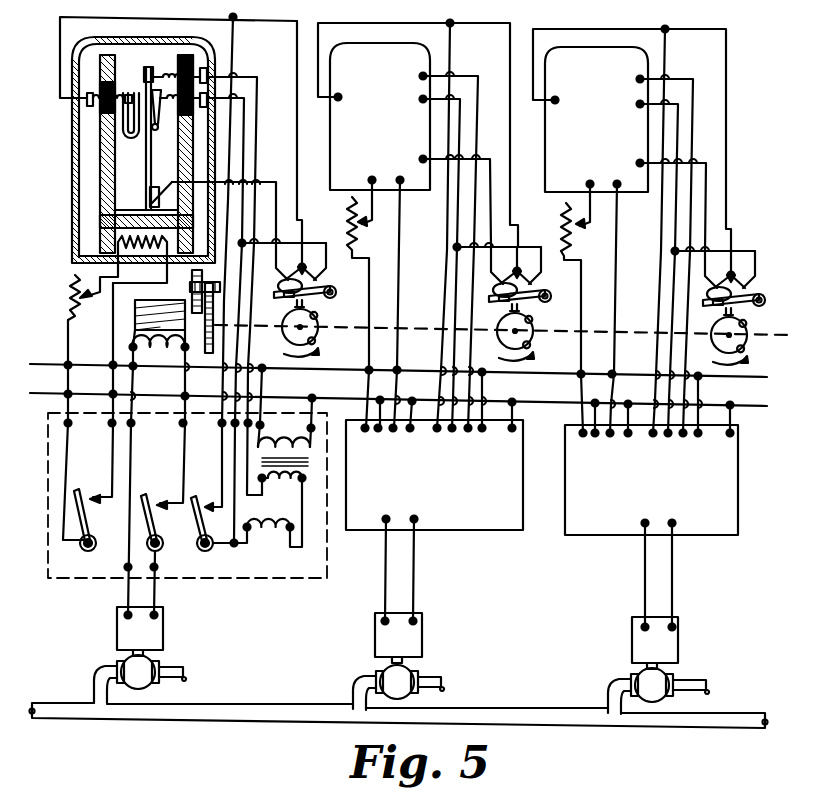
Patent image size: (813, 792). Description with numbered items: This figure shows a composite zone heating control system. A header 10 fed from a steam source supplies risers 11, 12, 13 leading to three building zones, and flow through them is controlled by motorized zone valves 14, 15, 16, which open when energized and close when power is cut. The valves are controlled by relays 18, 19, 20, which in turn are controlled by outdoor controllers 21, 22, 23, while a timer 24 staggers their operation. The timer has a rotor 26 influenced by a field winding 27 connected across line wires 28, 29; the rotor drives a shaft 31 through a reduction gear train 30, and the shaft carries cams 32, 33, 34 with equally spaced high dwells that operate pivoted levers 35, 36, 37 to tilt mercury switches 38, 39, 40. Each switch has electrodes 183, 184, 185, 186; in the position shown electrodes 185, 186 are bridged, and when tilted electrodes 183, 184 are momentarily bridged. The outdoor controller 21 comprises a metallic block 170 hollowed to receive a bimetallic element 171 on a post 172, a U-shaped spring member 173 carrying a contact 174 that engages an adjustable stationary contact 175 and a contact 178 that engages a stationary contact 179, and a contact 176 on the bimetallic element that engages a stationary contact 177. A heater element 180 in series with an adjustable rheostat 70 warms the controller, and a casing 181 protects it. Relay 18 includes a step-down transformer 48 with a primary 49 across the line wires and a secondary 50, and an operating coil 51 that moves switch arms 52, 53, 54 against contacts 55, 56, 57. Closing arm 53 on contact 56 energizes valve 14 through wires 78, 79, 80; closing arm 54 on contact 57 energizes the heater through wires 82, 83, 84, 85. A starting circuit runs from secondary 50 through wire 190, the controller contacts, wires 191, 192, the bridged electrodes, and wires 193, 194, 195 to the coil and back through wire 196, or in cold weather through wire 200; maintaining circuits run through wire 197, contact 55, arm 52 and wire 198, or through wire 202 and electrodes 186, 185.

The header 10 is at (180, 712).
The riser 11 is at (96, 672).
The riser 12 is at (348, 684).
The riser 13 is at (599, 689).
The motorized zone valve 14 is at (160, 641).
The motorized zone valve 15 is at (422, 644).
The motorized zone valve 16 is at (679, 649).
The relay 18 is at (268, 572).
The relay 19 is at (470, 533).
The relay 20 is at (708, 536).
The outdoor controller 21 is at (62, 128).
The outdoor controller 22 is at (382, 131).
The outdoor controller 23 is at (606, 135).
The timer 24 is at (756, 331).
The rotor 26 is at (138, 300).
The field winding 27 is at (152, 350).
The line wire 28 is at (30, 393).
The line wire 29 is at (30, 364).
The reduction gear train 30 is at (192, 288).
The shaft 31 is at (258, 328).
The cam 32 is at (318, 340).
The cam 33 is at (538, 342).
The cam 34 is at (742, 346).
The pivoted lever 35 is at (284, 308).
The pivoted lever 36 is at (502, 306).
The pivoted lever 37 is at (710, 312).
The mercury switch 38 is at (338, 288).
The mercury switch 39 is at (549, 298).
The mercury switch 40 is at (760, 300).
The step-down transformer 48 is at (311, 462).
The primary 49 is at (274, 446).
The secondary 50 is at (272, 486).
The operating coil 51 is at (260, 536).
The switch arm 52 is at (198, 546).
The switch arm 53 is at (166, 574).
The switch arm 54 is at (97, 540).
The contact 55 is at (206, 491).
The contact 56 is at (160, 486).
The contact 57 is at (100, 486).
The adjustable rheostat 70 is at (72, 291).
The wire 78 is at (183, 410).
The wire 79 is at (154, 590).
The wire 80 is at (131, 379).
The wire 82 is at (111, 408).
The wire 83 is at (66, 408).
The wire 84 is at (98, 302).
The wire 85 is at (112, 334).
The metallic block 170 is at (100, 176).
The bimetallic element 171 is at (152, 175).
The post 172 is at (140, 204).
The spring member 173 is at (144, 70).
The contact 174 is at (155, 74).
The adjustable stationary contact 175 is at (174, 94).
The contact 176 is at (157, 126).
The adjustable stationary contact 177 is at (166, 127).
The contact 178 is at (125, 132).
The adjustable stationary contact 179 is at (114, 95).
The heater element 180 is at (126, 262).
The casing 181 is at (72, 216).
The electrode 183 is at (322, 281).
The electrode 184 is at (301, 261).
The electrode 185 is at (300, 268).
The electrode 186 is at (282, 282).
The wire 190 is at (244, 75).
The wire 191 is at (128, 14).
The wire 192 is at (296, 137).
The wire 193 is at (329, 246).
The wire 194 is at (233, 519).
The wire 195 is at (247, 547).
The wire 196 is at (302, 547).
The wire 197 is at (231, 40).
The wire 198 is at (234, 548).
The wire 200 is at (257, 88).
The wire 202 is at (268, 184).